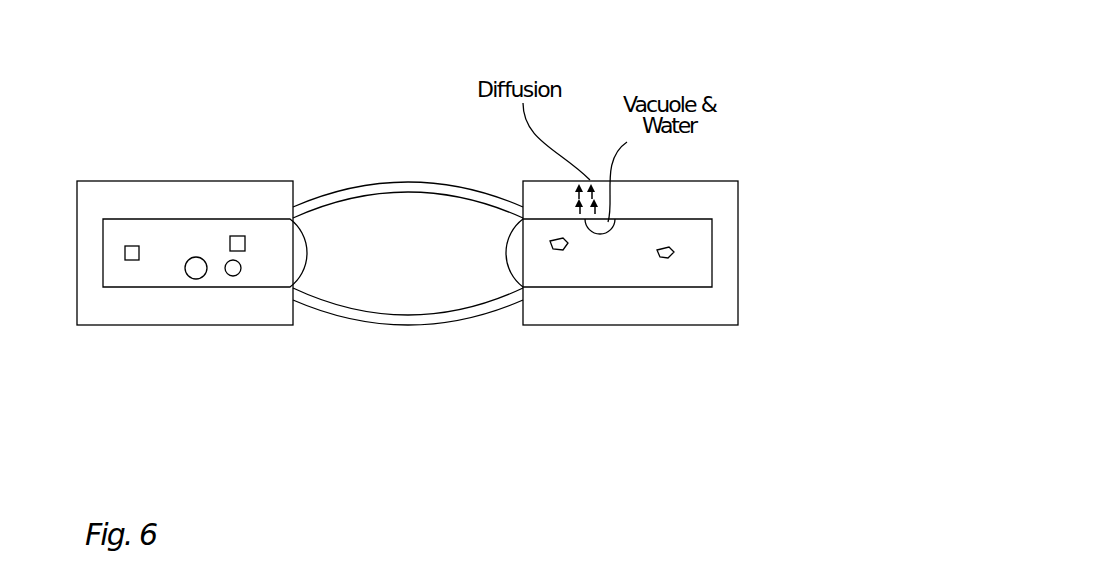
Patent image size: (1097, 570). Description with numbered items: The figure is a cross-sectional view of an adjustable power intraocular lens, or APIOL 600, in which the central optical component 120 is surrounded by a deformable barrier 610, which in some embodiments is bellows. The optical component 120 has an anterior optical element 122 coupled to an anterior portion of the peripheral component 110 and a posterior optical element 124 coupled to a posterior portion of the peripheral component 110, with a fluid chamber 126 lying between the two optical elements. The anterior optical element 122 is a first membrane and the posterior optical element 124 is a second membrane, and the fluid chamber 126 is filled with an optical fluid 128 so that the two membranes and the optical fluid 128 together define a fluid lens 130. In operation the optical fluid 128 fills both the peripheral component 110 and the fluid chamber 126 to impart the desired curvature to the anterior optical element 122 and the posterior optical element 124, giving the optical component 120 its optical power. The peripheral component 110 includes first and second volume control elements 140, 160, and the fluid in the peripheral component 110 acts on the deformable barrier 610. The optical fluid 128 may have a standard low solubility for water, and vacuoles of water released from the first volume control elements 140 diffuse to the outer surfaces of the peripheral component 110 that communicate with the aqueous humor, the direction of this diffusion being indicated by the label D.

The peripheral component 110 is at (125, 190).
The optical component 120 is at (317, 165).
The anterior optical element 122 is at (422, 182).
The posterior optical element 124 is at (470, 320).
The fluid chamber 126 is at (405, 255).
The optical fluid 128 is at (347, 291).
The fluid lens 130 is at (373, 356).
The first volume control elements 140 is at (232, 277).
The second volume control elements 160 is at (235, 237).
The APIOL 600 is at (816, 126).
The deformable barrier 610 is at (507, 252).
The drug particles D is at (668, 252).